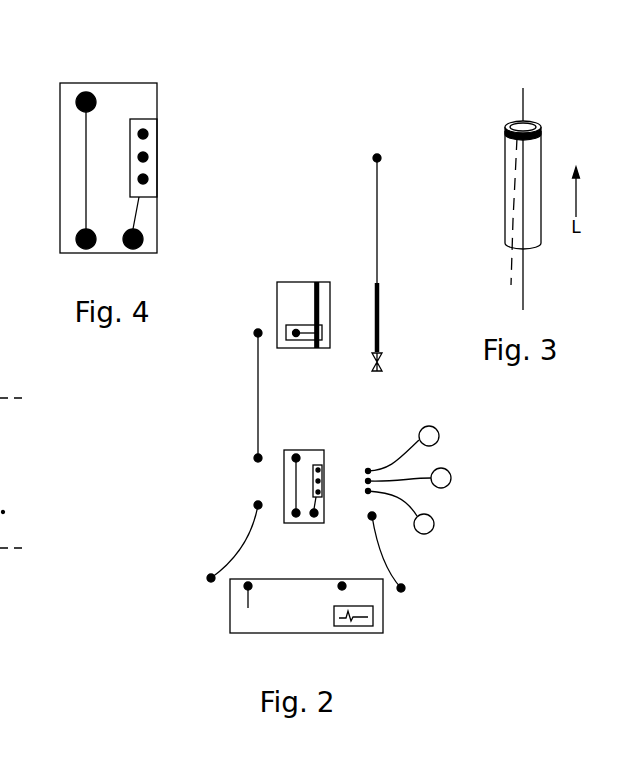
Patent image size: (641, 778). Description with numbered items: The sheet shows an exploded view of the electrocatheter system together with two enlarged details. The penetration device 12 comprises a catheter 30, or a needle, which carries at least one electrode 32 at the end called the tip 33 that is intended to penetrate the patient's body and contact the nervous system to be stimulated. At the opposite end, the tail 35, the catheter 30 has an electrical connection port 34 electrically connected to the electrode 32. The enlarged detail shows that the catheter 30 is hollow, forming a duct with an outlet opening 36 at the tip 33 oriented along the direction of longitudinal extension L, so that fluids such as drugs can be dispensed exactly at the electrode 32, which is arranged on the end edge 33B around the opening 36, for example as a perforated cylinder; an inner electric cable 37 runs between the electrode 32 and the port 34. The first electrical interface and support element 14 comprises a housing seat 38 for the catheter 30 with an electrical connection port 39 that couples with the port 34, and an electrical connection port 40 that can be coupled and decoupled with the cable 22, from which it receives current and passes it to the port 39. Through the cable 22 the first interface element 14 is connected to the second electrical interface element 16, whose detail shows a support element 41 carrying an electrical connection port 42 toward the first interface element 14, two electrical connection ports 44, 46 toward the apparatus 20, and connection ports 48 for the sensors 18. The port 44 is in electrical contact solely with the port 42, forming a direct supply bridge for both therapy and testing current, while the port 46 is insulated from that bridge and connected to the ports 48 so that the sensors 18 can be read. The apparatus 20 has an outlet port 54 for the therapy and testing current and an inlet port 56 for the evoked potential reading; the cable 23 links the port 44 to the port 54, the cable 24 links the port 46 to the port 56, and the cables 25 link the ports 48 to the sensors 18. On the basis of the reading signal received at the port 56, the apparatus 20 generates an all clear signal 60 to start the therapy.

In FIG. 2, the penetration device 12 is at (354, 213).
In FIG. 4, the first electrical interface and support element 14 is at (50, 200).
In FIG. 2, the first electrical interface and support element 14 is at (271, 282).
In FIG. 2, the second electrical interface element 16 is at (318, 437).
In FIG. 2, the sensors 18 is at (0, 428).
In FIG. 2, the apparatus 20 is at (218, 623).
In FIG. 2, the electrical connection cable 22 is at (257, 399).
In FIG. 2, the electrical connection cable 23 is at (233, 552).
In FIG. 2, the electrical connection cable 24 is at (384, 558).
In FIG. 2, the electrical connection cables 25 is at (396, 453).
In FIG. 3, the catheter 30 is at (537, 240).
In FIG. 2, the catheter 30 is at (378, 270).
In FIG. 3, the electrode 32 is at (540, 131).
In FIG. 2, the electrode 32 is at (382, 157).
In FIG. 3, the tip 33 is at (563, 99).
In FIG. 2, the tip 33 is at (349, 137).
In FIG. 3, the end edge 33B is at (531, 117).
In FIG. 2, the electrical connection port 34 is at (380, 322).
In FIG. 2, the tail 35 is at (406, 354).
In FIG. 3, the outlet opening 36 is at (501, 115).
In FIG. 3, the inner electric cable 37 is at (508, 266).
In FIG. 2, the housing seat 38 is at (320, 305).
In FIG. 2, the electrical connection port 39 is at (320, 316).
In FIG. 2, the electrical connection port 40 is at (297, 338).
In FIG. 4, the support element 41 is at (72, 136).
In FIG. 4, the electrical connection port 42 is at (76, 102).
In FIG. 4, the electrical connection port 44 is at (76, 242).
In FIG. 4, the electrical connection port 46 is at (138, 247).
In FIG. 4, the connection port 48 is at (148, 134).
In FIG. 2, the outlet port 54 is at (247, 606).
In FIG. 2, the inlet port 56 is at (341, 582).
In FIG. 2, the all clear signal 60 is at (367, 632).